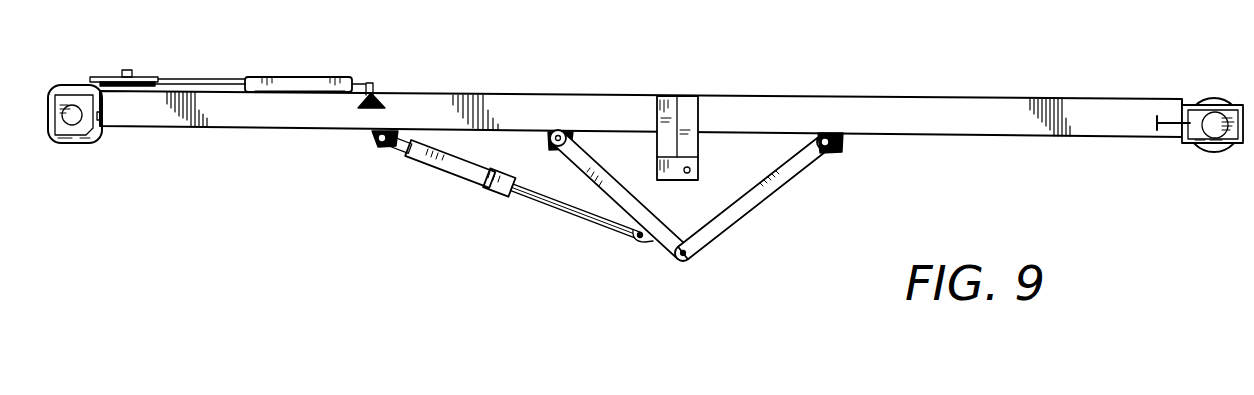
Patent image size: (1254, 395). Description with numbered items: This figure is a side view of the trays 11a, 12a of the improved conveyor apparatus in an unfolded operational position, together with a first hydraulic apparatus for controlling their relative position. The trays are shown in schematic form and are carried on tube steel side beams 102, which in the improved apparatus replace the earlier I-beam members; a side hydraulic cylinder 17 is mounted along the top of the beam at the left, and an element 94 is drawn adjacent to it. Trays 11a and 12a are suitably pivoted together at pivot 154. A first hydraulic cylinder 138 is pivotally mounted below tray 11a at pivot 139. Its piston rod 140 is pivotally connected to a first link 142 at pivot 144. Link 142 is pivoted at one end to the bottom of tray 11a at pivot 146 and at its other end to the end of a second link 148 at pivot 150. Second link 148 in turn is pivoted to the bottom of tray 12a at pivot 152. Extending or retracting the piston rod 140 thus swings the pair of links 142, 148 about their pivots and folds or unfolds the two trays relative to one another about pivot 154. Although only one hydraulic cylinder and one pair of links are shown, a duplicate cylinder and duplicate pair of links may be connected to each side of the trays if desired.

The tube steel side beam 102 is at (253, 110).
The tray 11a is at (447, 88).
The tray 12a is at (969, 96).
The slide plate 94 is at (165, 77).
The side hydraulic cylinder 17 is at (298, 82).
The pivot 139 is at (373, 143).
The first hydraulic cylinder 138 is at (457, 162).
The piston rod 140 is at (560, 205).
The pivot 146 is at (571, 132).
The first link 142 is at (585, 162).
The pivot 144 is at (640, 237).
The second link 148 is at (742, 207).
The pivot 150 is at (687, 258).
The pivot 152 is at (826, 133).
The pivot 154 is at (693, 167).